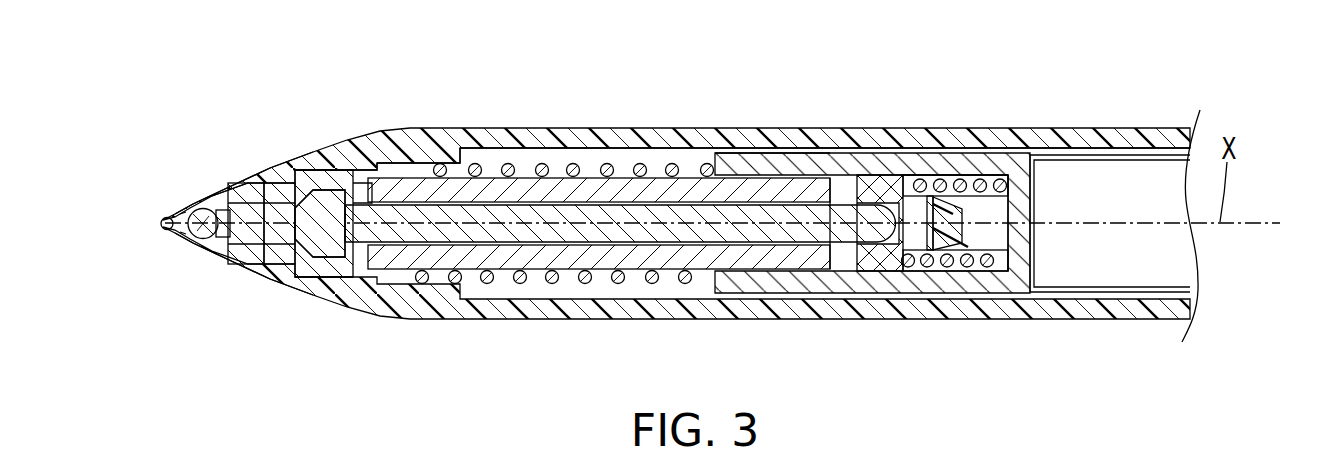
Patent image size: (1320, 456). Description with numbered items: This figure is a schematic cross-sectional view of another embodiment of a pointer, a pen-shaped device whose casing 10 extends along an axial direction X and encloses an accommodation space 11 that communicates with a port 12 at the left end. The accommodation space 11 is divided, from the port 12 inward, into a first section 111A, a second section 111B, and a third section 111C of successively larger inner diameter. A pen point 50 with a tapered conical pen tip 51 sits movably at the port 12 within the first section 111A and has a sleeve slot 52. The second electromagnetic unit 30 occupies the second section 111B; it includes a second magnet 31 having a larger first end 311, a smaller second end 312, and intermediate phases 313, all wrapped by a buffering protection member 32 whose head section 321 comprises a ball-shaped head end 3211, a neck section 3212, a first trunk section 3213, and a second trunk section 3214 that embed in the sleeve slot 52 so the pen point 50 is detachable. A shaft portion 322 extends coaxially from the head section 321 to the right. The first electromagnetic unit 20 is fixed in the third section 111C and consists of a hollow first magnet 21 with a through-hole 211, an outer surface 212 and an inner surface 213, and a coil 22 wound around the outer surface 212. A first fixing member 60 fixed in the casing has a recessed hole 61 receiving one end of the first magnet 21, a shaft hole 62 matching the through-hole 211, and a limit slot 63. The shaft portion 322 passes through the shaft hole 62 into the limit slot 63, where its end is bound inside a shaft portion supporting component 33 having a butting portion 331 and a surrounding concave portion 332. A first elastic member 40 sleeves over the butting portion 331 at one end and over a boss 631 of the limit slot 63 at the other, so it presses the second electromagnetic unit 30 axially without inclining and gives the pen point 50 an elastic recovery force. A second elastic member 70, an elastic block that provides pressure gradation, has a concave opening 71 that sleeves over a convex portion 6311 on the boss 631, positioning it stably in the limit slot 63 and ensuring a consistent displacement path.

The casing 10 is at (1075, 120).
The accommodation space 11 is at (526, 150).
The first section 111A is at (243, 180).
The second section 111B is at (300, 165).
The third section 111C is at (466, 149).
The port 12 is at (238, 182).
The first electromagnetic unit 20 is at (732, 66).
The first magnet 21 is at (708, 163).
The through-hole 211 is at (583, 270).
The outer surface 212 is at (503, 284).
The inner surface 213 is at (660, 270).
The coil 22 is at (612, 166).
The second electromagnetic unit 30 is at (227, 210).
The second magnet 31 is at (330, 178).
The first end 311 is at (346, 212).
The second end 312 is at (228, 188).
The phases 313 is at (283, 172).
The protection member 32 is at (215, 392).
The head section 321 is at (325, 343).
The head end 3211 is at (205, 238).
The neck section 3212 is at (226, 240).
The first trunk section 3213 is at (246, 252).
The second trunk section 3214 is at (290, 266).
The shaft portion 322 is at (388, 242).
The shaft portion supporting component 33 is at (985, 372).
The butting portion 331 is at (931, 252).
The concave portion 332 is at (905, 272).
The first elastic member 40 is at (1020, 155).
The pen point 50 is at (174, 237).
The pen tip 51 is at (160, 223).
The sleeve slot 52 is at (206, 206).
The first fixing member 60 is at (964, 173).
The recessed hole 61 is at (776, 152).
The shaft hole 62 is at (838, 152).
The limit slot 63 is at (889, 151).
The boss 631 is at (995, 228).
The convex portion 6311 is at (940, 174).
The second elastic member 70 is at (985, 266).
The concave opening 71 is at (958, 249).